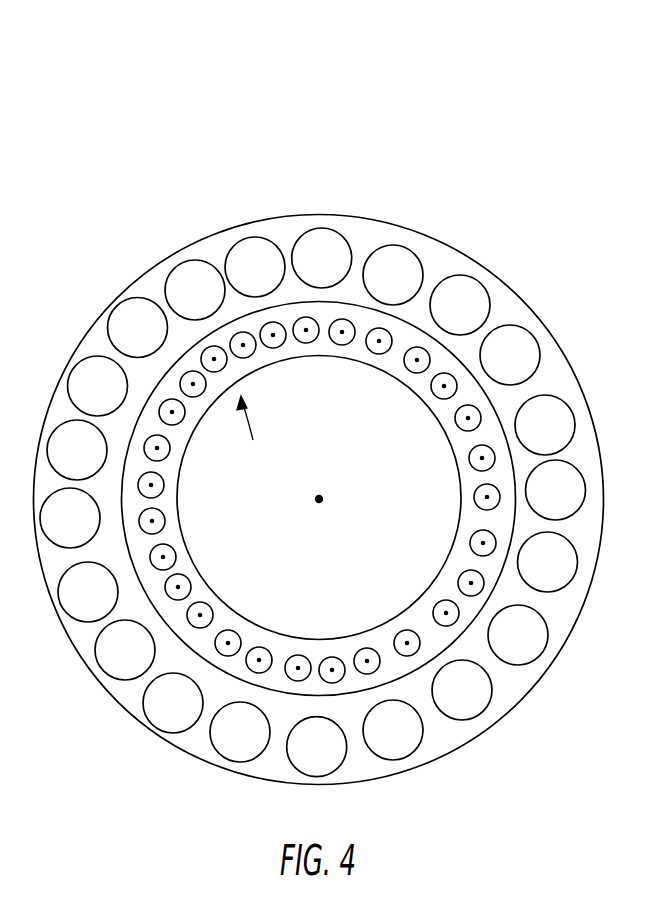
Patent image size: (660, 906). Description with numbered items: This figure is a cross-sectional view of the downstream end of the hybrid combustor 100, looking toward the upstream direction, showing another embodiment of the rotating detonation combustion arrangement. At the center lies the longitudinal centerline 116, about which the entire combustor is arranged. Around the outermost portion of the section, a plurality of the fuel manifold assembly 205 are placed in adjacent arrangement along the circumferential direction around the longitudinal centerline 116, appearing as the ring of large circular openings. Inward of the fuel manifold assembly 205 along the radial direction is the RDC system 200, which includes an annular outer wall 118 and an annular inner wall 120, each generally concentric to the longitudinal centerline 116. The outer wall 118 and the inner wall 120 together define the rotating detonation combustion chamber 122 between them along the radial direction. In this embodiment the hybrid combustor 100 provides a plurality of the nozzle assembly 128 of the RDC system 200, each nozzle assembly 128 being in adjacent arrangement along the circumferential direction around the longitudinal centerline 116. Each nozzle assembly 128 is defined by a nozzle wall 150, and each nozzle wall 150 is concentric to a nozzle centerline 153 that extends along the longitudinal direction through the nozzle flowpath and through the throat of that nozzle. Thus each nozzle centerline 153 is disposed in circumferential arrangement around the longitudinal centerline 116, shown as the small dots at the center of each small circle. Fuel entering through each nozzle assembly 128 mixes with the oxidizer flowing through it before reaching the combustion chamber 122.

The hybrid combustor 100 is at (340, 126).
The fuel manifold assembly 205 is at (194, 260).
The nozzle assembly 128 is at (340, 320).
The outer wall 118 is at (408, 320).
The nozzle wall 150 is at (450, 372).
The inner wall 120 is at (345, 358).
The RDC system 200 is at (258, 435).
The rotating detonation combustion chamber 122 is at (173, 460).
The longitudinal centerline 116 is at (319, 503).
The nozzle centerline 153 is at (484, 544).